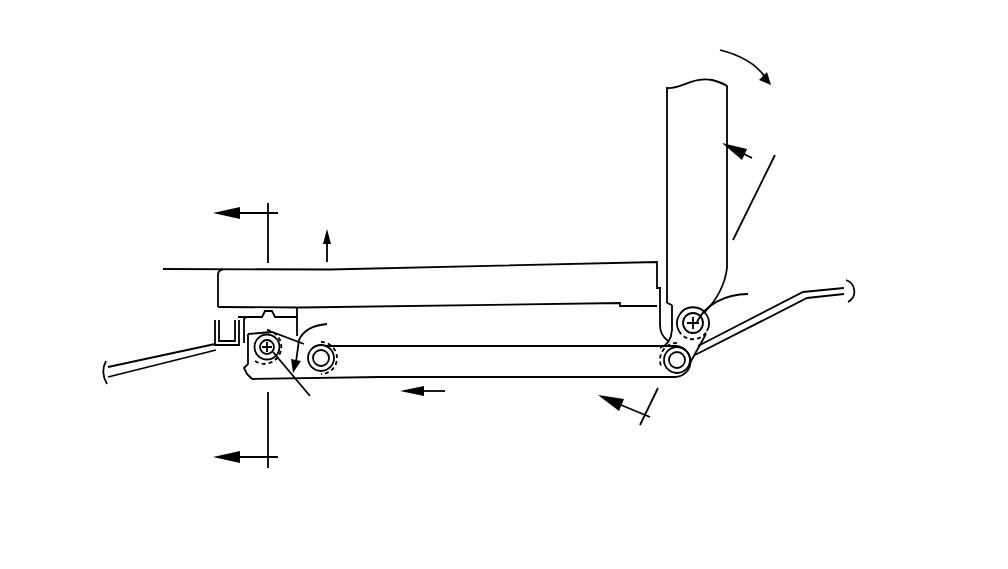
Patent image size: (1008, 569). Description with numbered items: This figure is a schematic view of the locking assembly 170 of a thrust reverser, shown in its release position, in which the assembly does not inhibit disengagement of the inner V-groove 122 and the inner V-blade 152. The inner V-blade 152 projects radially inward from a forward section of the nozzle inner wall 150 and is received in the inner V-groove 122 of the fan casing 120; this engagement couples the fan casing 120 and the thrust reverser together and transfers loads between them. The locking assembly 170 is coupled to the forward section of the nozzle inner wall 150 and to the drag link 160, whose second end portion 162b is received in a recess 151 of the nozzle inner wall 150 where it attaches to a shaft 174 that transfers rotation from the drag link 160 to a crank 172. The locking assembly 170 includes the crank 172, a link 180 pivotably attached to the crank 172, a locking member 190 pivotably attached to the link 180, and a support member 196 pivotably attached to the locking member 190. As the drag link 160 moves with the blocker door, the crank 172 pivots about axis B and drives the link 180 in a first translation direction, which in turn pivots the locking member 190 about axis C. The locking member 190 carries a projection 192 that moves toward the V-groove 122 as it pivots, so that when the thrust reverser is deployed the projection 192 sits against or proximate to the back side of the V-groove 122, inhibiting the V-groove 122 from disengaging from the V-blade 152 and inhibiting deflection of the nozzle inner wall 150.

The fan casing 120 is at (99, 269).
The inner V-groove 122 is at (217, 345).
The nozzle inner wall 150 is at (532, 276).
The recess 151 is at (762, 327).
The inner V-blade 152 is at (224, 320).
The drag link 160 is at (677, 153).
The second end portion of the drag link 162b is at (710, 272).
The locking assembly 170 is at (562, 446).
The crank 172 is at (693, 357).
The shaft 174 is at (689, 298).
The link 180 is at (532, 380).
The locking member 190 is at (272, 380).
The projection 192 is at (250, 377).
The support member 196 is at (260, 325).